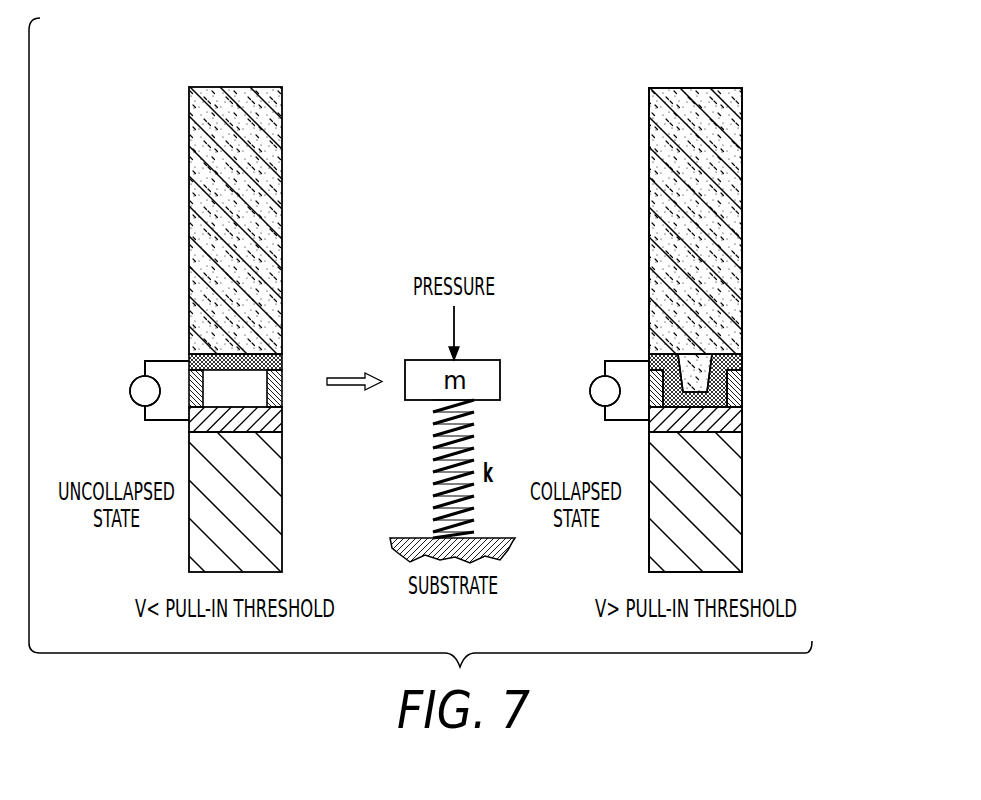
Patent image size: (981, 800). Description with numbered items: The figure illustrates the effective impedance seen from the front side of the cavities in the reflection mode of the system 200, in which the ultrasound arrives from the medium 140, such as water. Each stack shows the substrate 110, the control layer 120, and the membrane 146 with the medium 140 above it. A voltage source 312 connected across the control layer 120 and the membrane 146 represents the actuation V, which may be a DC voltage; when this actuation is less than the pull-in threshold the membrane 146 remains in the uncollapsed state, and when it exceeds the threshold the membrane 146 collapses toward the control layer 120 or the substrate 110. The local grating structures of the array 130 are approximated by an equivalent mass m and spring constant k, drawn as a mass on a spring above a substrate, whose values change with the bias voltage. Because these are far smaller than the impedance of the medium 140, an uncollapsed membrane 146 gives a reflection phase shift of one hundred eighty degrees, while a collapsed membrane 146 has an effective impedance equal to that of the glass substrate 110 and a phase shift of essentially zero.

The system 200 is at (728, 55).
The medium 140 is at (282, 220).
The membrane 146 is at (282, 361).
The control layer 120 is at (282, 420).
The substrate 110 is at (282, 502).
The array 130 is at (114, 355).
The voltage source 312 is at (139, 407).